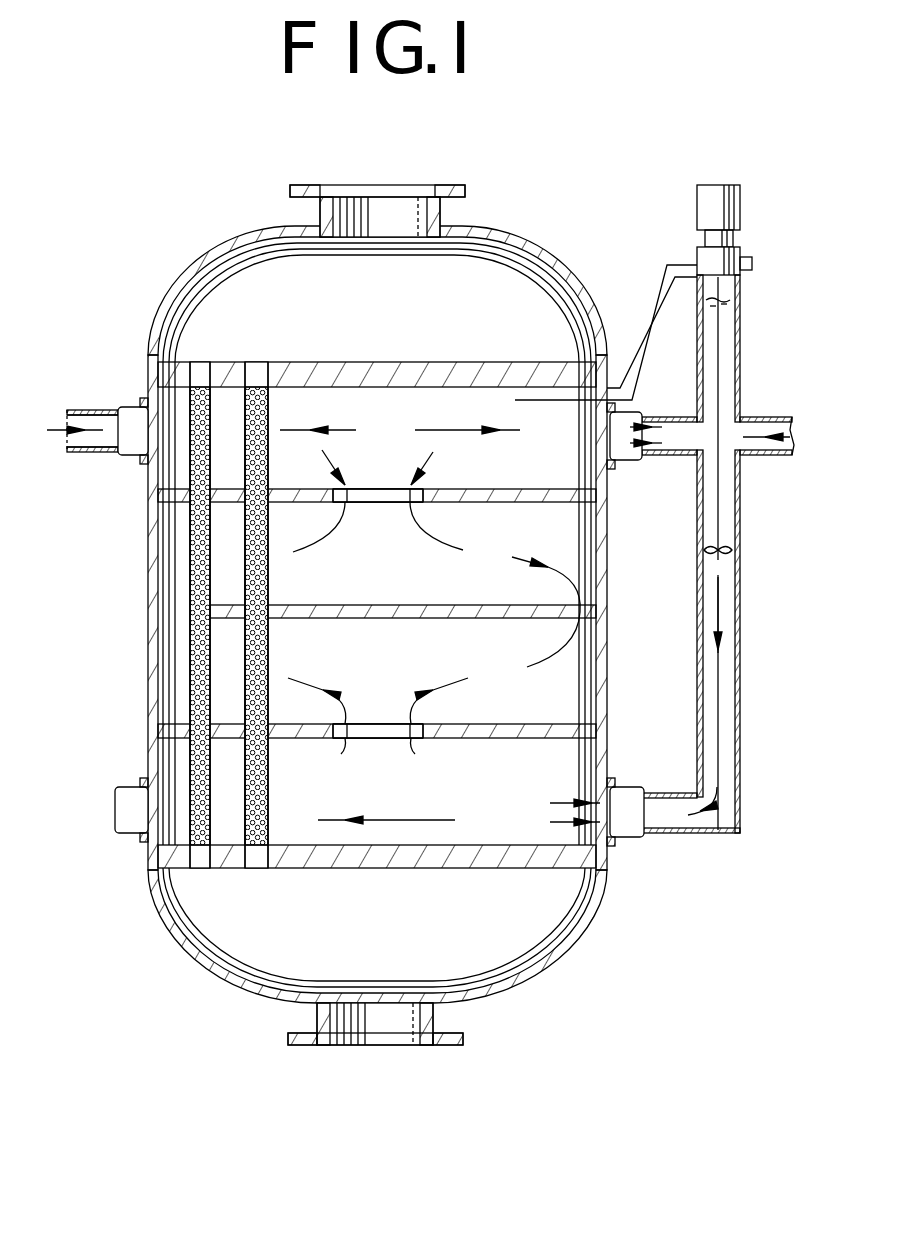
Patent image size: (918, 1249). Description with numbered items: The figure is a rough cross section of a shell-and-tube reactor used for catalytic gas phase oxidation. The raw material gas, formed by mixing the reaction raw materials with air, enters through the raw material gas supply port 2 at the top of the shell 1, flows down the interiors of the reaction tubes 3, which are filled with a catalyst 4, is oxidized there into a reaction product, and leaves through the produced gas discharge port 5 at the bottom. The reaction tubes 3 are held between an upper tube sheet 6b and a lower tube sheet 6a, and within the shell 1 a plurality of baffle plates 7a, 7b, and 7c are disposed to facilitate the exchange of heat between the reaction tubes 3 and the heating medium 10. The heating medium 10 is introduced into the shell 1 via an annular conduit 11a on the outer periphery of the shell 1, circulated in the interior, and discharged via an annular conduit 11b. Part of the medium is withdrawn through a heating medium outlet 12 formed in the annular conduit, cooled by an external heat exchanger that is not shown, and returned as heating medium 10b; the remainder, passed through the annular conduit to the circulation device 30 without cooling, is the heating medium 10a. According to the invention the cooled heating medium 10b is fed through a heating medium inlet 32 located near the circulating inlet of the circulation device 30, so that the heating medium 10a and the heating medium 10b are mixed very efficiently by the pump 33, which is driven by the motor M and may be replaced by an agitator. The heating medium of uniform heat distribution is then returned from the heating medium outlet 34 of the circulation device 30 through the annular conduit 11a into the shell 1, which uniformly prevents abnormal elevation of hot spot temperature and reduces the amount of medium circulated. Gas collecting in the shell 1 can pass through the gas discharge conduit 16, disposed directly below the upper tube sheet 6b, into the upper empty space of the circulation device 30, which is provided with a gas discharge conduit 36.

The shell 1 is at (148, 636).
The raw material gas supply port 2 is at (374, 197).
The reaction tubes 3 is at (188, 522).
The catalyst 4 is at (188, 748).
The produced gas discharge port 5 is at (379, 1030).
The lower tube sheet 6a is at (520, 866).
The upper tube sheet 6b is at (326, 372).
The baffle plate 7a is at (412, 705).
The baffle plate 7b is at (378, 610).
The baffle plate 7c is at (588, 508).
The heating medium 10 is at (509, 620).
The heating medium 10a is at (630, 456).
The heating medium 10b is at (83, 410).
The annular conduit 11a is at (115, 810).
The annular conduit 11b is at (131, 405).
The heating medium outlet 12 is at (68, 422).
The gas discharge conduit 16 is at (600, 323).
The circulation device 30 is at (725, 608).
The heating medium inlet 32 is at (795, 441).
The pump 33 is at (735, 549).
The heating medium outlet 34 is at (673, 833).
The gas discharge conduit 36 is at (752, 263).
The motor M is at (741, 208).